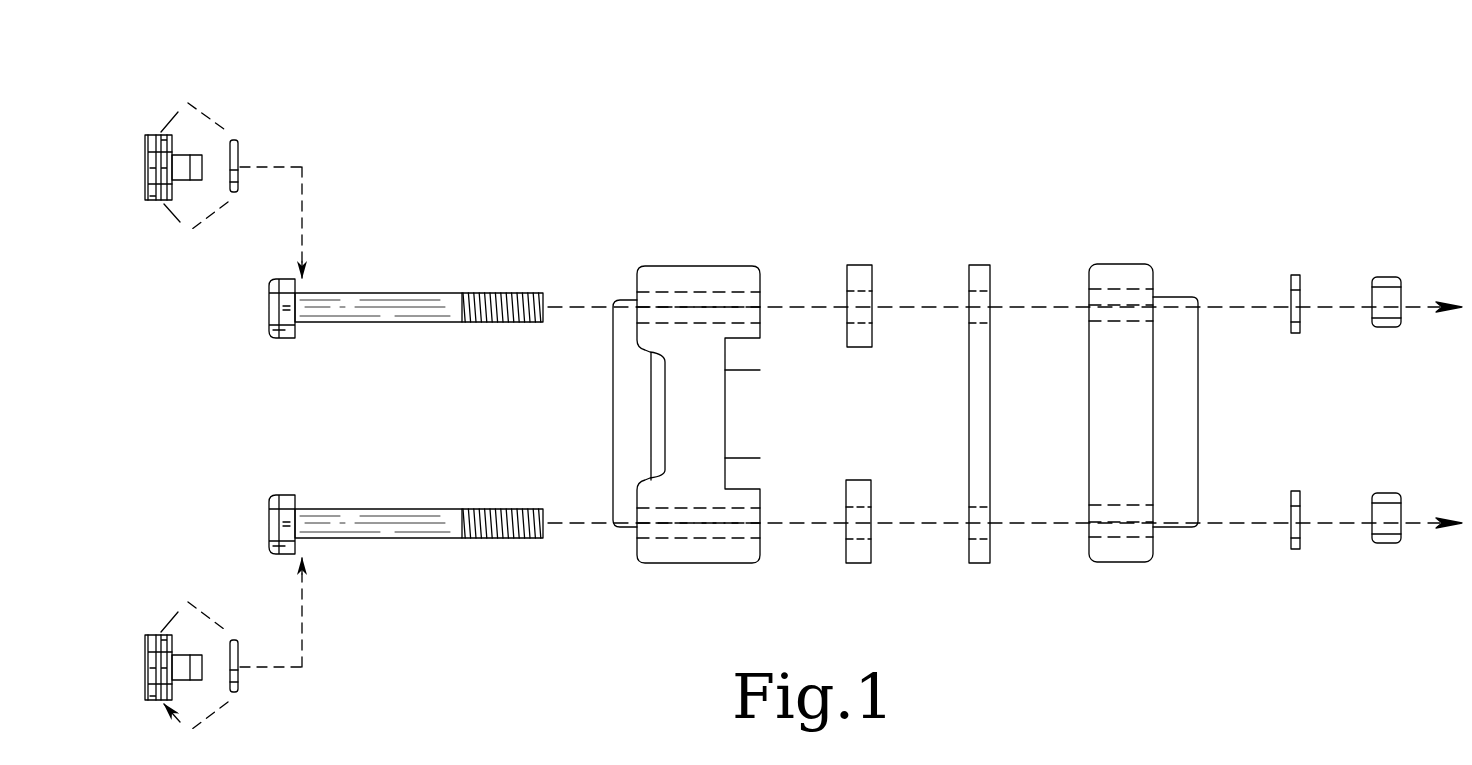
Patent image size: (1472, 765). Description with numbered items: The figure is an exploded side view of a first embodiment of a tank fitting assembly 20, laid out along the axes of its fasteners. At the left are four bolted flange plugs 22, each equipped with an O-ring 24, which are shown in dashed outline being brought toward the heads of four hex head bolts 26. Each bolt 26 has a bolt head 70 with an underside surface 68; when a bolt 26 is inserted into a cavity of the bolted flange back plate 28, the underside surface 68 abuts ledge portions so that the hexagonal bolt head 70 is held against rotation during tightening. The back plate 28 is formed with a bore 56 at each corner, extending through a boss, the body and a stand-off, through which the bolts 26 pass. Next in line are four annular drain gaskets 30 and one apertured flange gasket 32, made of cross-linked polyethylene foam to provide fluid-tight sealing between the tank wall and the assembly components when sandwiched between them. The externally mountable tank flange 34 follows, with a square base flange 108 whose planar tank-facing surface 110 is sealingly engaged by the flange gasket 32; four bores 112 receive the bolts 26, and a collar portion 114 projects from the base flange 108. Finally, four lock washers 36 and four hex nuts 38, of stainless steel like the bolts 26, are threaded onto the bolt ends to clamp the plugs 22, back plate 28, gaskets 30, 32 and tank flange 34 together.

The tank fitting assembly 20 is at (965, 112).
The bolted flange plug 22 is at (150, 128).
The O-ring 24 is at (244, 134).
The hex head bolt 26 is at (386, 283).
The bolted flange back plate 28 is at (673, 261).
The annular drain gasket 30 is at (861, 261).
The apertured flange gasket 32 is at (984, 261).
The externally mountable tank flange 34 is at (1118, 410).
The lock washer 36 is at (1297, 271).
The hex nut 38 is at (1388, 271).
The bore 56 is at (703, 545).
The underside surface 68 is at (296, 332).
The bolt head 70 is at (282, 336).
The base flange 108 is at (1120, 562).
The tank-facing surface 110 is at (1089, 379).
The bore 112 is at (1102, 537).
The collar portion 114 is at (1178, 508).